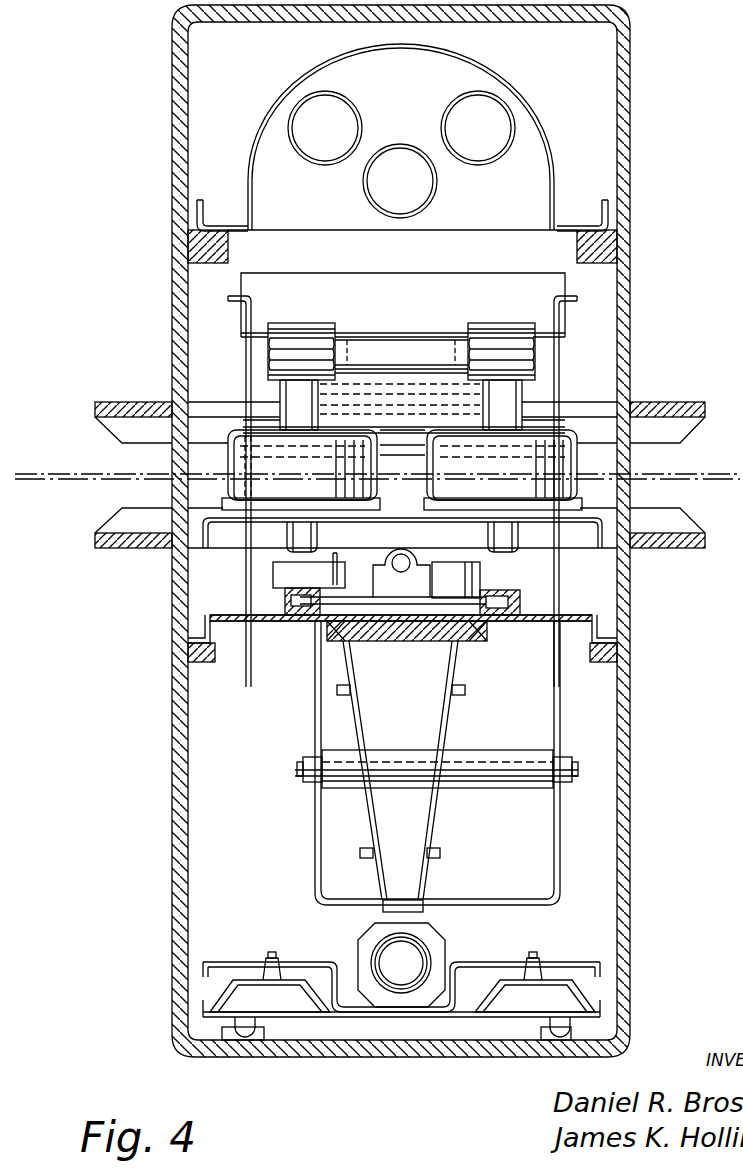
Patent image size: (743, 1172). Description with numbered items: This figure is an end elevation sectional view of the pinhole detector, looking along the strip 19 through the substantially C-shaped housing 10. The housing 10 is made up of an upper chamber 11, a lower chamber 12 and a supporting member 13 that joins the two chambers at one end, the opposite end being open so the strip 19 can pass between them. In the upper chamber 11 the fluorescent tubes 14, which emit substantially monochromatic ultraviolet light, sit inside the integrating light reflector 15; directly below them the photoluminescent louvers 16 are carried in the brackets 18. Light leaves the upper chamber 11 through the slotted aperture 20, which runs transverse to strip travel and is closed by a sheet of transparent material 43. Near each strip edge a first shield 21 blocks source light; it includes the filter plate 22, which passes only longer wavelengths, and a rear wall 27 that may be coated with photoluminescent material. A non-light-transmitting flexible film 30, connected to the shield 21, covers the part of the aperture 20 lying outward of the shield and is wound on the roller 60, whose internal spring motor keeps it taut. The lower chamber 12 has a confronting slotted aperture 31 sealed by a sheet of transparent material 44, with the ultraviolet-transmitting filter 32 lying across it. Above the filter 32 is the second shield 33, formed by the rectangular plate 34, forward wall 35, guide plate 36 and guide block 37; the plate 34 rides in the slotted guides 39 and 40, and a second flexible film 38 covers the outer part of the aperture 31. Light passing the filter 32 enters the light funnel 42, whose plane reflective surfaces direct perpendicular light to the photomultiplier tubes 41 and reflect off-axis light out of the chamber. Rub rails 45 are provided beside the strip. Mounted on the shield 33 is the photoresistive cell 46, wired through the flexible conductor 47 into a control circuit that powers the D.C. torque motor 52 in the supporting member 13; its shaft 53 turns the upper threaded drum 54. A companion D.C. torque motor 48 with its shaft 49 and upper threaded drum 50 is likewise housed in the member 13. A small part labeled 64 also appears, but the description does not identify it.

The housing 10 is at (125, 324).
The upper chamber 11 is at (172, 148).
The lower chamber 12 is at (190, 656).
The supporting member 13 is at (176, 488).
The fluorescent tubes 14 is at (404, 144).
The integrating light reflector 15 is at (512, 88).
The photoluminescent louvers 16 is at (277, 275).
The brackets 18 is at (248, 377).
The strip 19 is at (52, 470).
The slotted aperture 20 is at (420, 434).
The first shield 21 is at (410, 330).
The filter plate 22 is at (390, 368).
The rear wall 27 is at (447, 338).
The flexible film 30 is at (434, 368).
The slotted aperture 31 is at (413, 642).
The ultraviolet-transmitting filter 32 is at (394, 641).
The second shield 33 is at (270, 572).
The rectangular plate 34 is at (447, 597).
The forward wall 35 is at (482, 584).
The guide plate 36 is at (482, 570).
The guide block 37 is at (273, 580).
The flexible film 38 is at (384, 630).
The slotted guide 39 is at (285, 607).
The slotted guide 40 is at (525, 612).
The photomultiplier tubes 41 is at (401, 965).
The light funnel 42 is at (455, 732).
The sheet of transparent material 43 is at (697, 420).
The sheet of transparent material 44 is at (705, 536).
The rub rails 45 is at (688, 435).
The photoresistive cell 46 is at (403, 573).
The flexible conductor 47 is at (350, 578).
The D.C. torque motor 48 is at (503, 470).
The shaft 49 is at (502, 466).
The upper threaded drum 50 is at (505, 322).
The D.C. torque motor 52 is at (301, 470).
The shaft 53 is at (299, 466).
The upper threaded drum 54 is at (300, 322).
The roller 60 is at (410, 455).
The pin 64 is at (331, 566).